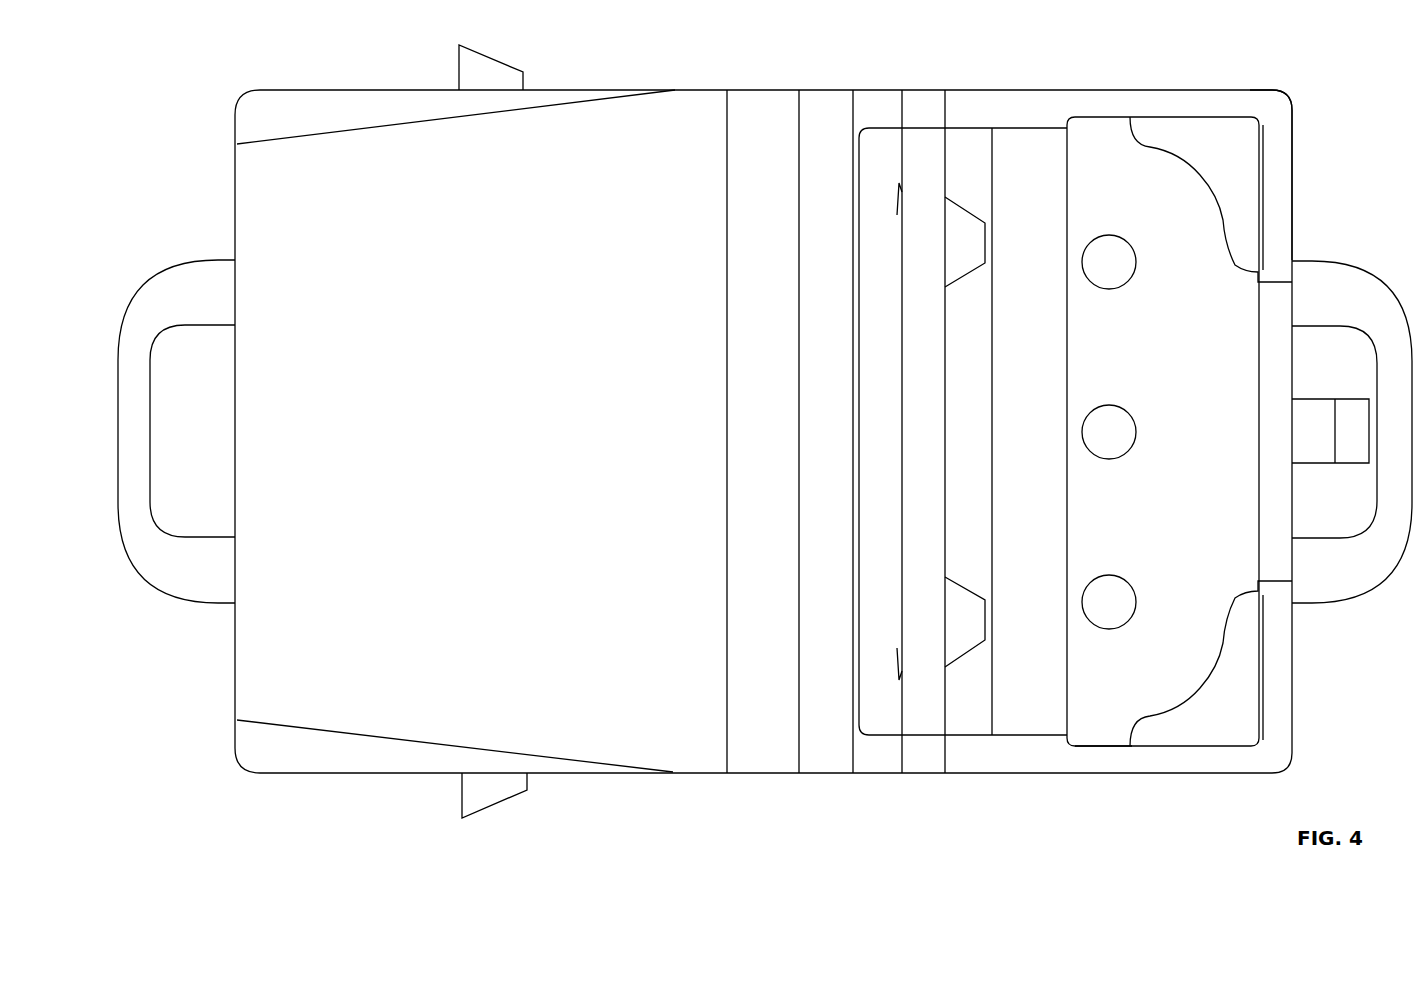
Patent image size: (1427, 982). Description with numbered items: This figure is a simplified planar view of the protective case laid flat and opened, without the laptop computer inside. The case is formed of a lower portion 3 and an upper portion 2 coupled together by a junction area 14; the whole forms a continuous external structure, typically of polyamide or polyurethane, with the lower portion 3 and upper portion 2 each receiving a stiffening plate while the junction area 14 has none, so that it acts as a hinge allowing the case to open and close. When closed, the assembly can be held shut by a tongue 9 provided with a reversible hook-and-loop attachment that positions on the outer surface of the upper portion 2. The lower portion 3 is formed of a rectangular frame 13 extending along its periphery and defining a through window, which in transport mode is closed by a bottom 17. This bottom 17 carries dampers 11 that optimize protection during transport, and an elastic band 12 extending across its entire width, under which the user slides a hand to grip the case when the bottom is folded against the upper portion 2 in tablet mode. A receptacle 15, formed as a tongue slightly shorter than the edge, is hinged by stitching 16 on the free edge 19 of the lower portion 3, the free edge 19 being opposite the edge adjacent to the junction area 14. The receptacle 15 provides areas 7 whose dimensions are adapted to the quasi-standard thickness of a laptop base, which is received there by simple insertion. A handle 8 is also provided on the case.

The upper portion 2 is at (668, 112).
The lower portion 3 is at (1277, 90).
The areas 7 is at (1233, 133).
The handle 8 is at (1358, 285).
The tongue 9 is at (1353, 440).
The dampers 11 is at (953, 215).
The elastic band 12 is at (923, 107).
The rectangular frame 13 is at (1128, 100).
The junction area 14 is at (799, 110).
The receptacle 15 is at (1093, 720).
The stitching 16 is at (1298, 370).
The bottom 17 is at (1020, 720).
The free edge 19 is at (1294, 145).